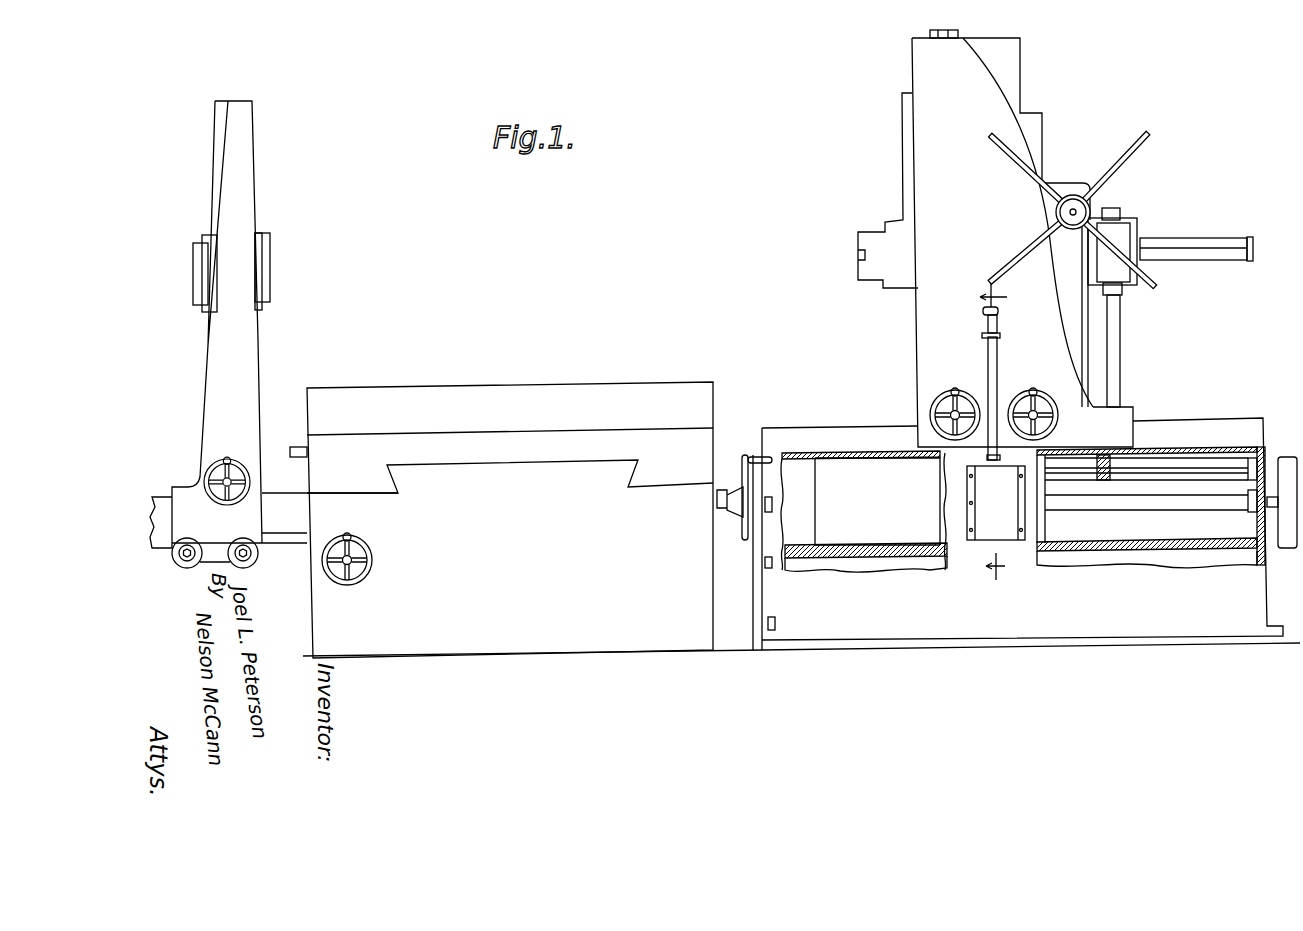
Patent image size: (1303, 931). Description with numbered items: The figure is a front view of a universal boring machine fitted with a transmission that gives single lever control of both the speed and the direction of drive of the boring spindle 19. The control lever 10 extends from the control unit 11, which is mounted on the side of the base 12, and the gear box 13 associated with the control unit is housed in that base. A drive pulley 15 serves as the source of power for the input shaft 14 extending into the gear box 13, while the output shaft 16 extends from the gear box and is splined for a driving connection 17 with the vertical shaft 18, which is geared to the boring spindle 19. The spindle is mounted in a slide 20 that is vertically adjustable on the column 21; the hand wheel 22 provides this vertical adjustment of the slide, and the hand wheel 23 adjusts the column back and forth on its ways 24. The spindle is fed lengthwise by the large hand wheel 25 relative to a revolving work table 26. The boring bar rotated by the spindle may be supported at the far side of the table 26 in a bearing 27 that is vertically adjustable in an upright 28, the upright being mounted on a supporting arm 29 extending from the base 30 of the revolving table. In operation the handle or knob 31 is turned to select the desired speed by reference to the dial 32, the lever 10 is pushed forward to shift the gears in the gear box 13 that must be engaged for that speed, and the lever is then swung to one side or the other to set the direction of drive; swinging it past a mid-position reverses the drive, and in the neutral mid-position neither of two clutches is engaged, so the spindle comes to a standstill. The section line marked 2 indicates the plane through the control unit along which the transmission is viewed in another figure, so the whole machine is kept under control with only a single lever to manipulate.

The section line 2- 2 is at (988, 434).
The control lever 10 is at (992, 372).
The control unit 11 is at (980, 508).
The base 12 is at (1022, 529).
The gear box 13 is at (845, 473).
The input shaft 14 is at (1175, 503).
The drive pulley 15 is at (1288, 538).
The output shaft 16 is at (1163, 470).
The driving connection 17 is at (1119, 480).
The vertical shaft 18 is at (1117, 342).
The boring spindle 19 is at (1160, 238).
The slide 20 is at (902, 280).
The column 21 is at (928, 175).
The hand wheel 22 is at (937, 390).
The hand wheel 23 is at (1037, 390).
The ways 24 is at (1222, 427).
The large hand wheel 25 is at (1134, 160).
The revolving work table 26 is at (680, 392).
The bearing 27 is at (265, 237).
The upright 28 is at (245, 185).
The supporting arm 29 is at (283, 508).
The base of the revolving table 30 is at (427, 559).
The handle or knob 31 is at (997, 322).
The dial 32 is at (985, 332).